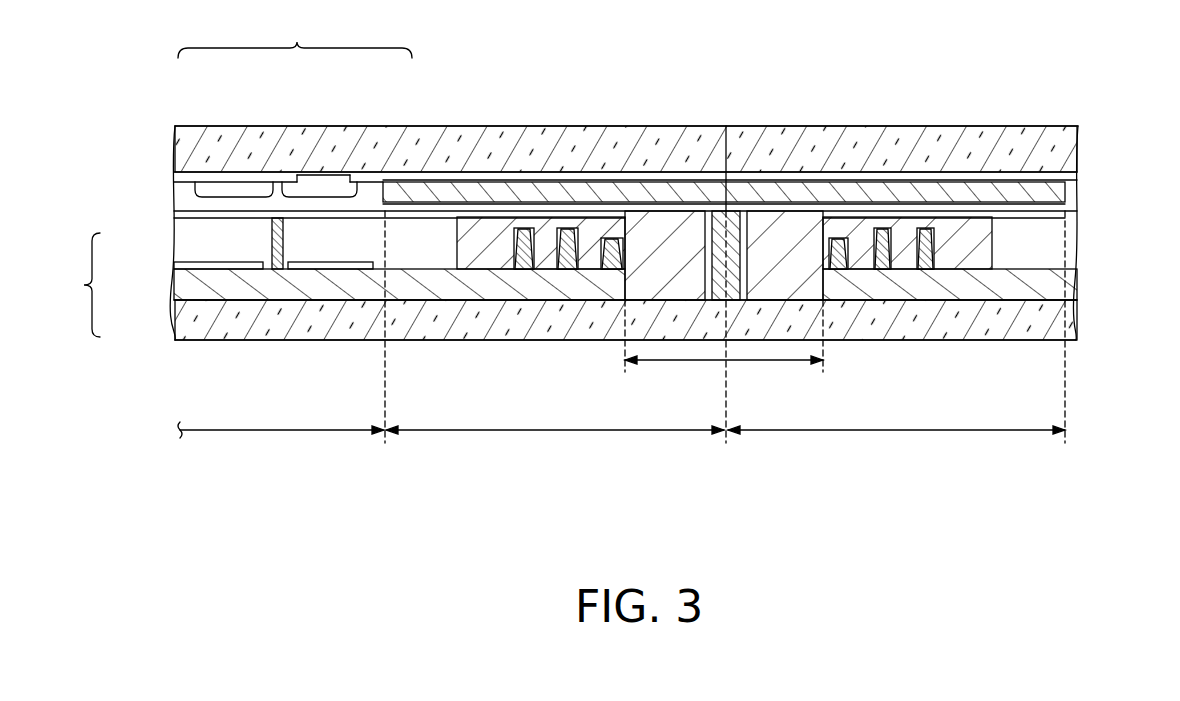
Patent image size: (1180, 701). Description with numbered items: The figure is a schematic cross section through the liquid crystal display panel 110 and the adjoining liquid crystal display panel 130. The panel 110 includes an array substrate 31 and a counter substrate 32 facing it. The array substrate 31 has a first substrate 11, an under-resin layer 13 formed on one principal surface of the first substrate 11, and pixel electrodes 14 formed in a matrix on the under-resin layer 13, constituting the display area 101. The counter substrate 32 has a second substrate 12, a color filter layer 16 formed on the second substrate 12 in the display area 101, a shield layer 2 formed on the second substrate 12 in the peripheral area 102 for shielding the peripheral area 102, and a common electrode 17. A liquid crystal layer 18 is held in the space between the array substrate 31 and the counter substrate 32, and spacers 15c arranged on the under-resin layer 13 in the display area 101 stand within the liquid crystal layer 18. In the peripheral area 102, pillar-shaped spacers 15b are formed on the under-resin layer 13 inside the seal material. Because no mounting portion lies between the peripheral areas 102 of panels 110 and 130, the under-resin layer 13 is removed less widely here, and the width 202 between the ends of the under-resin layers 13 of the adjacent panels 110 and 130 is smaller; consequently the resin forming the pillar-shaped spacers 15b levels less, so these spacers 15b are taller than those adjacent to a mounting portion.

The shield layer 2 is at (398, 178).
The first substrate 11 is at (198, 323).
The second substrate 12 is at (210, 147).
The under-resin layer 13 is at (215, 287).
The pixel electrodes 14 is at (197, 262).
The pillar-shaped spacers 15b is at (523, 228).
The spacers 15c is at (276, 270).
The color filter layer 16 is at (318, 187).
The common electrode 17 is at (617, 216).
The liquid crystal layer 18 is at (195, 226).
The array substrate 31 is at (74, 285).
The counter substrate 32 is at (295, 33).
The display area 101 is at (273, 432).
The peripheral area 102 is at (555, 432).
The liquid crystal display panel 110 is at (450, 112).
The liquid crystal display panel 130 is at (1036, 110).
The width 202 is at (670, 362).